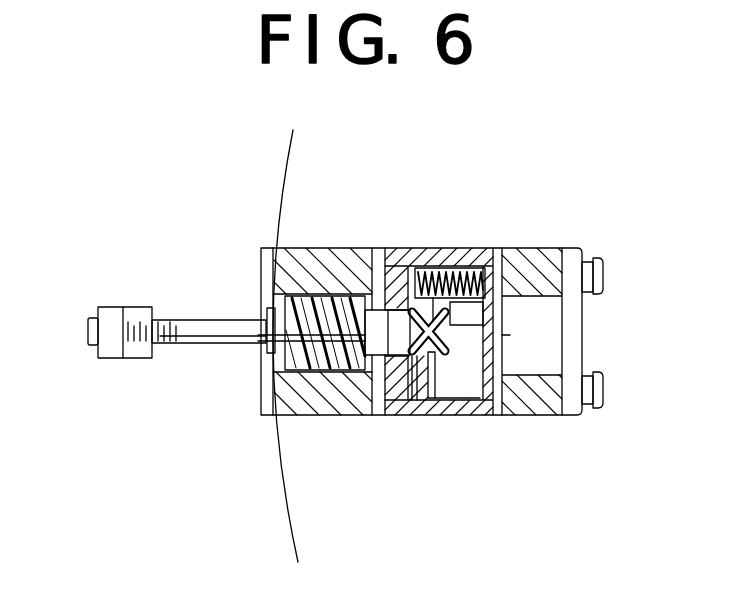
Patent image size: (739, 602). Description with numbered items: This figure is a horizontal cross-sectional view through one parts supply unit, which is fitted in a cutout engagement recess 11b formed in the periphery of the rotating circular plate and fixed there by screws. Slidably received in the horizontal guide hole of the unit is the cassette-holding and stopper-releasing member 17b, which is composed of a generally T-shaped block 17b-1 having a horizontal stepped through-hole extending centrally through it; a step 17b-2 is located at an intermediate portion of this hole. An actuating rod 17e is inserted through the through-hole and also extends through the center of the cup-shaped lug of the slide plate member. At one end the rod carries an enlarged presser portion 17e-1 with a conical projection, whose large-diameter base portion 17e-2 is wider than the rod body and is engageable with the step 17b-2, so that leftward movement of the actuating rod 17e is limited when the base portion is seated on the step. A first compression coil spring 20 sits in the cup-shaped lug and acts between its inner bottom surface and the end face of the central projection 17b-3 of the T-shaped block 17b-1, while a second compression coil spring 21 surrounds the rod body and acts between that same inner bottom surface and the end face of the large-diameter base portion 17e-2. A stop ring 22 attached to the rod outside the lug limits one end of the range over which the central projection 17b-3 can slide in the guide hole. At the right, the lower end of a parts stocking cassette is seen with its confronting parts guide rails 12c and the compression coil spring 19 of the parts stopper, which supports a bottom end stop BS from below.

The cutout engagement recess 11b is at (310, 248).
The cassette-holding and stopper-releasing member 17b is at (394, 242).
The T-shaped block 17b-1 is at (402, 272).
The step 17b-2 is at (362, 390).
The central projection 17b-3 is at (368, 292).
The actuating rod 17e is at (185, 325).
The enlarged presser portion 17e-1 is at (436, 354).
The large-diameter base portion 17e-2 is at (416, 402).
The compression coil spring 19 is at (470, 268).
The first compression coil spring 20 is at (290, 355).
The second compression coil spring 21 is at (262, 343).
The stop ring 22 is at (266, 327).
The parts guide rails 12c is at (497, 313).
The bottom end stop BS is at (495, 345).